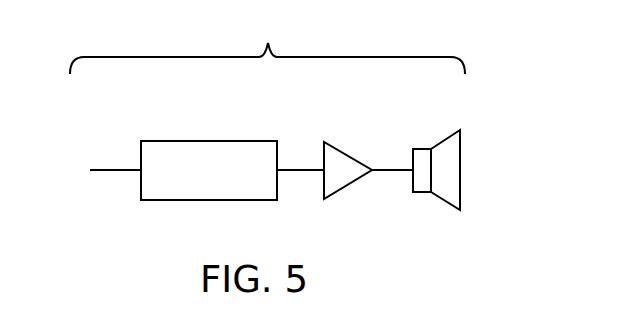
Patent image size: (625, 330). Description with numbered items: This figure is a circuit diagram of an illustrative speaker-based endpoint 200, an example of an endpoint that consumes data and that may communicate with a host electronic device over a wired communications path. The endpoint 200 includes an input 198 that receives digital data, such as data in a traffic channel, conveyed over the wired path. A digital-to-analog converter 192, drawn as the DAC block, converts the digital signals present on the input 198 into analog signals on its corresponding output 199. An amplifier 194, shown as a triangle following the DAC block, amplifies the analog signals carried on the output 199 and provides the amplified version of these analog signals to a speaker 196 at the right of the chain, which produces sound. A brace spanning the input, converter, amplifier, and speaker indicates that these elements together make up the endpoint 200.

The endpoint 200 is at (267, 46).
The input 198 is at (113, 168).
The digital-to-analog converter 192 is at (227, 141).
The output 199 is at (305, 170).
The amplifier 194 is at (344, 155).
The speaker 196 is at (453, 112).